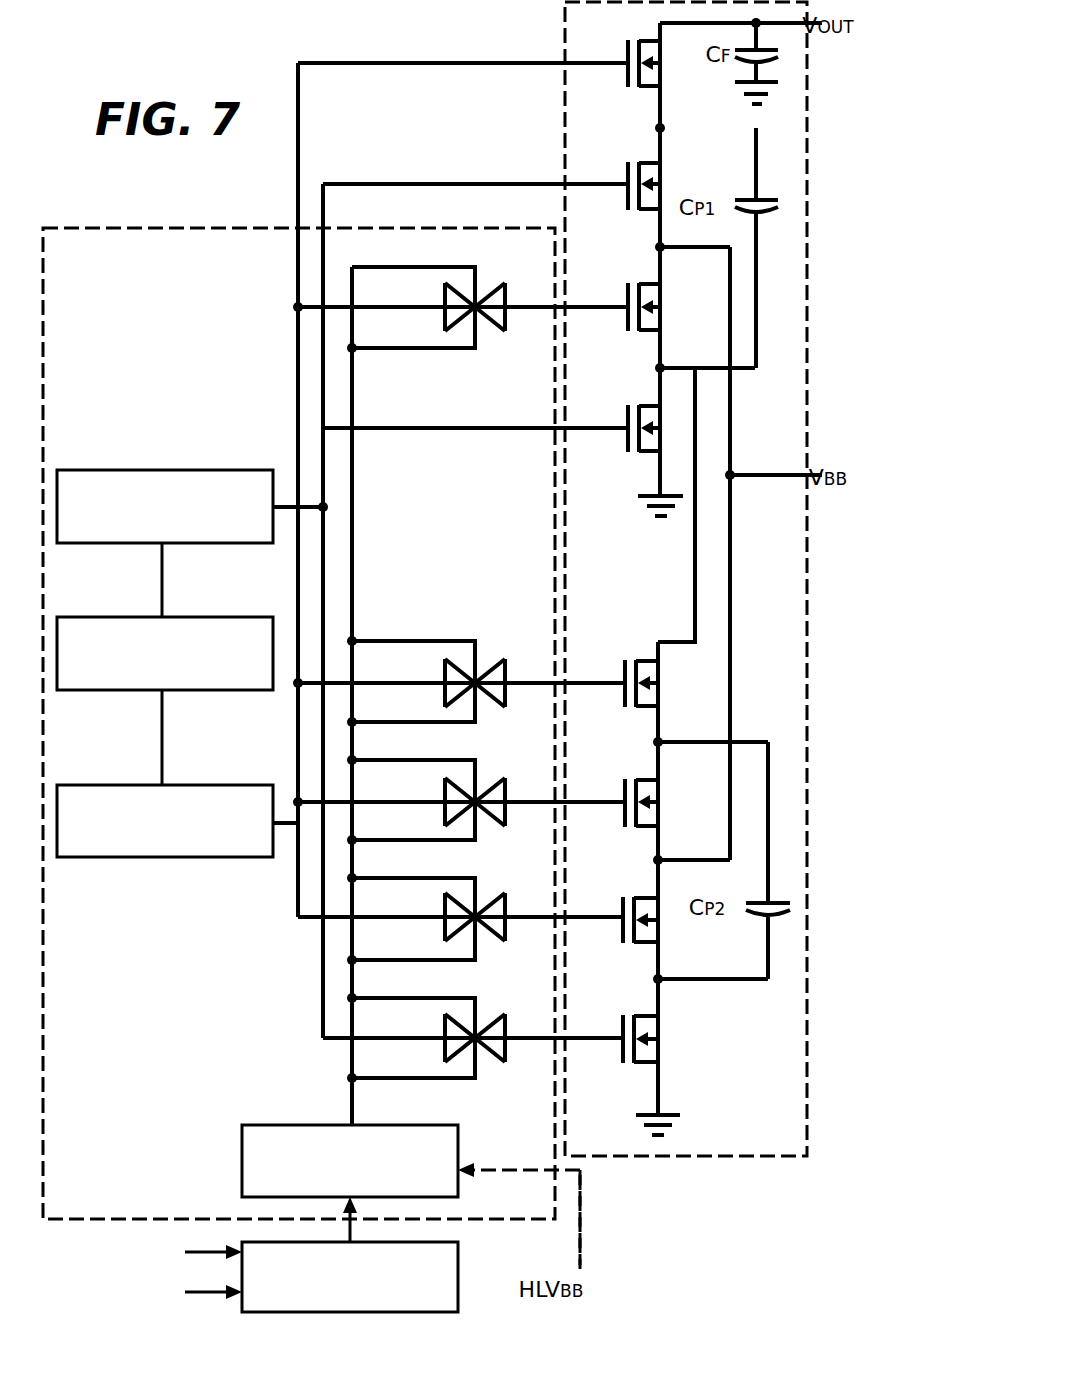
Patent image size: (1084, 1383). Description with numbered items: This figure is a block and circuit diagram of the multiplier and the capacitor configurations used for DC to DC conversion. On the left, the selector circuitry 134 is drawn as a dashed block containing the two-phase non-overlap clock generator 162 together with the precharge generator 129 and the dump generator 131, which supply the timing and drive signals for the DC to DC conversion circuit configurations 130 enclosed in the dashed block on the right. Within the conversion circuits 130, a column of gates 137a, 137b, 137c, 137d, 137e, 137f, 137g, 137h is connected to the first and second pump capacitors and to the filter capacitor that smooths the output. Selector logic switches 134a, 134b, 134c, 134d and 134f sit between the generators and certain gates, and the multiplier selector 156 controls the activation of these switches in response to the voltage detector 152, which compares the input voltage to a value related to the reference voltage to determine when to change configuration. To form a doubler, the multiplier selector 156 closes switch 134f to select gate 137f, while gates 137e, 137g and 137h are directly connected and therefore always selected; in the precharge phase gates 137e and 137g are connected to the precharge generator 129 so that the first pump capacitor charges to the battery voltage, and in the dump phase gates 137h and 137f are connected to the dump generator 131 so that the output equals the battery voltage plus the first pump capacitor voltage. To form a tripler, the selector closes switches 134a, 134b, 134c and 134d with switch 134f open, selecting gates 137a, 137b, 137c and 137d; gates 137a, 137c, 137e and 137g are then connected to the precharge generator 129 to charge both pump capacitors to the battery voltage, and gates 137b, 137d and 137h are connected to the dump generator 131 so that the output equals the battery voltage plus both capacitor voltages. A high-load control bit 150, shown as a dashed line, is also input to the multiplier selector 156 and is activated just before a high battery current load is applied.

The selector circuitry 134 is at (115, 227).
The DC to DC conversion circuit configurations 130 is at (667, 1156).
The precharge generator 129 is at (175, 545).
The two-phase non-overlap clock generator 162 is at (190, 690).
The dump generator 131 is at (180, 857).
The multiplier selector 156 is at (268, 1125).
The voltage detector 152 is at (458, 1281).
The HLVBB control bit 150 is at (583, 1210).
The selector logic switch 134a is at (479, 1022).
The selector logic switch 134b is at (479, 902).
The selector logic switch 134c is at (479, 787).
The selector logic switch 134d is at (480, 667).
The selector logic switch 134f is at (481, 291).
The gate 137a is at (621, 1055).
The gate 137b is at (621, 936).
The gate 137c is at (623, 818).
The gate 137d is at (623, 699).
The gate 137e is at (626, 444).
The gate 137f is at (626, 322).
The gate 137g is at (626, 200).
The gate 137h is at (626, 78).